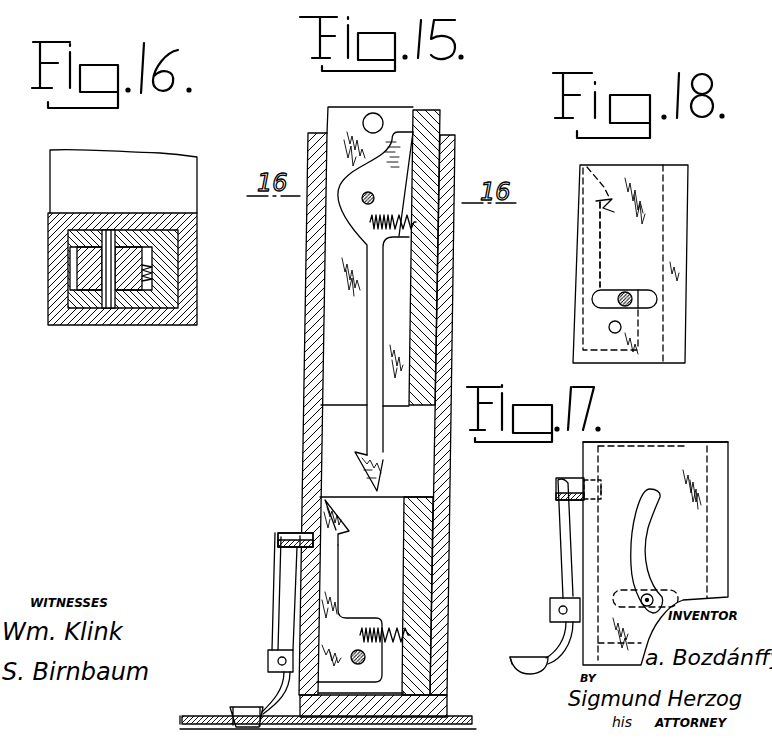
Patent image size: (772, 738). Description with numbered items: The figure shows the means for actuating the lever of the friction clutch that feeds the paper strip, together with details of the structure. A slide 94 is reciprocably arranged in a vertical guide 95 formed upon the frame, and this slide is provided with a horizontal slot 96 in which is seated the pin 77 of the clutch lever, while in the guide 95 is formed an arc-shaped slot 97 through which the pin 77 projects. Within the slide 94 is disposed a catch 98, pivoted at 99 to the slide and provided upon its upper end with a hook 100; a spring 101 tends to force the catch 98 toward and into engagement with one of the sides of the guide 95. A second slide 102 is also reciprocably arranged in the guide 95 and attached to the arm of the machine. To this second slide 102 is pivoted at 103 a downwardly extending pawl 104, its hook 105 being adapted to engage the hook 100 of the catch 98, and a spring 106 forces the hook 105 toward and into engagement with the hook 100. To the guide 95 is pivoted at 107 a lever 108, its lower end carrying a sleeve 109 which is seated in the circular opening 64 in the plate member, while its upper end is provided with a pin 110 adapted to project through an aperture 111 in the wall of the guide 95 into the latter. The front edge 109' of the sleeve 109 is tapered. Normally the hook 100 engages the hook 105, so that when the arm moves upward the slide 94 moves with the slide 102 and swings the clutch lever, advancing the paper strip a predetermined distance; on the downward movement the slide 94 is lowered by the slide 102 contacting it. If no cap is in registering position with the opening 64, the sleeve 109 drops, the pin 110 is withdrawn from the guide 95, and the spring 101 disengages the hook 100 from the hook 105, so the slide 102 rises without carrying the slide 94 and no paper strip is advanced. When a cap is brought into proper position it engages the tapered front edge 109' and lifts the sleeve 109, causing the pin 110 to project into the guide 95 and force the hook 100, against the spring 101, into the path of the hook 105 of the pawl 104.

In FIG. 15, the circular opening 64 is at (232, 712).
In FIG. 18, the pin 77 is at (625, 291).
In FIG. 17, the pin 77 is at (660, 608).
In FIG. 15, the slide 94 is at (418, 572).
In FIG. 18, the slide 94 is at (673, 233).
In FIG. 17, the slide 94 is at (684, 462).
In FIG. 15, the vertical guide 95 is at (443, 467).
In FIG. 16, the vertical guide 95 is at (187, 304).
In FIG. 17, the vertical guide 95 is at (722, 467).
In FIG. 18, the horizontal slot 96 is at (655, 300).
In FIG. 17, the horizontal slot 96 is at (662, 590).
In FIG. 17, the arc-shaped slot 97 is at (645, 518).
In FIG. 15, the catch 98 is at (339, 578).
In FIG. 18, the catch 98 is at (600, 252).
In FIG. 15, the pivot 99 is at (366, 657).
In FIG. 18, the pivot 99 is at (609, 327).
In FIG. 15, the hook 100 is at (350, 531).
In FIG. 18, the hook 100 is at (618, 194).
In FIG. 15, the spring 101 is at (400, 635).
In FIG. 15, the second slide 102 is at (423, 312).
In FIG. 16, the second slide 102 is at (167, 257).
In FIG. 15, the pivot 103 is at (362, 199).
In FIG. 16, the pivot 103 is at (92, 313).
In FIG. 15, the pawl 104 is at (367, 372).
In FIG. 16, the pawl 104 is at (136, 292).
In FIG. 15, the hook 105 is at (374, 468).
In FIG. 15, the spring 106 is at (410, 222).
In FIG. 16, the spring 106 is at (152, 275).
In FIG. 15, the pivot 107 is at (268, 660).
In FIG. 17, the pivot 107 is at (551, 610).
In FIG. 15, the lever 108 is at (272, 600).
In FIG. 17, the lever 108 is at (558, 540).
In FIG. 15, the sleeve 109 is at (235, 704).
In FIG. 17, the sleeve 109 is at (541, 683).
In FIG. 15, the front edge 109' is at (160, 715).
In FIG. 17, the front edge 109' is at (497, 680).
In FIG. 15, the pin 110 is at (290, 533).
In FIG. 17, the pin 110 is at (570, 478).
In FIG. 15, the aperture 111 is at (313, 544).
In FIG. 17, the aperture 111 is at (603, 496).